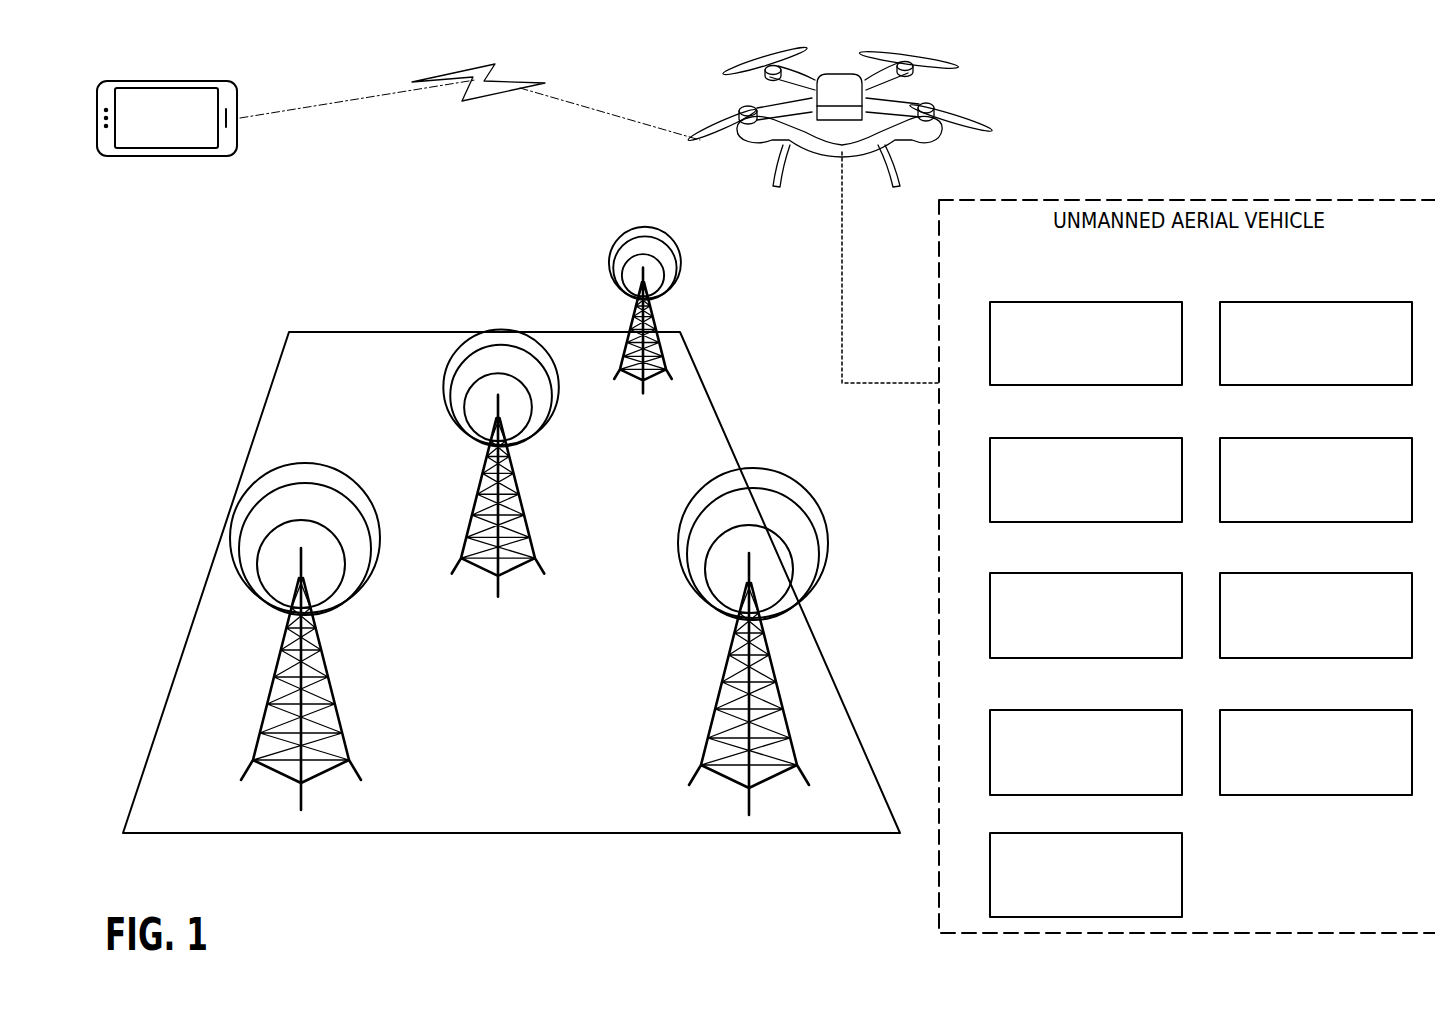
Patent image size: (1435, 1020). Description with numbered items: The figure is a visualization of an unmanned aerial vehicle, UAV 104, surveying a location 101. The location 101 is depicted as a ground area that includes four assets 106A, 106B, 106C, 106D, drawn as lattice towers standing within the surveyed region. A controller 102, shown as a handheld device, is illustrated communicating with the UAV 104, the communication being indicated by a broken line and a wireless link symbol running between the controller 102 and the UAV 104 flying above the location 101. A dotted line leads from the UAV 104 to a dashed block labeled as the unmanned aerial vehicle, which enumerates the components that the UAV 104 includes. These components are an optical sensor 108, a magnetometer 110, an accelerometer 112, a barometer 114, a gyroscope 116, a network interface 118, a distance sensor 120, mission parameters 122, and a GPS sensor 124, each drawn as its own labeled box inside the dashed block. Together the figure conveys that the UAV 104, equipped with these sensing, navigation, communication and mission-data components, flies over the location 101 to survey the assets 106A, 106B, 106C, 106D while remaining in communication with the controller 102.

The location 101 is at (511, 602).
The controller 102 is at (212, 119).
The UAV 104 is at (868, 115).
The asset 106A is at (678, 317).
The asset 106B is at (525, 466).
The asset 106C is at (329, 640).
The asset 106D is at (776, 643).
The optical sensor 108 is at (1086, 327).
The magnetometer 110 is at (1316, 327).
The accelerometer 112 is at (1086, 464).
The barometer 114 is at (1316, 464).
The gyroscope 116 is at (1086, 599).
The network interface 118 is at (1316, 599).
The distance sensor 120 is at (1086, 735).
The mission parameters 122 is at (1316, 735).
The GPS sensor 124 is at (1086, 857).